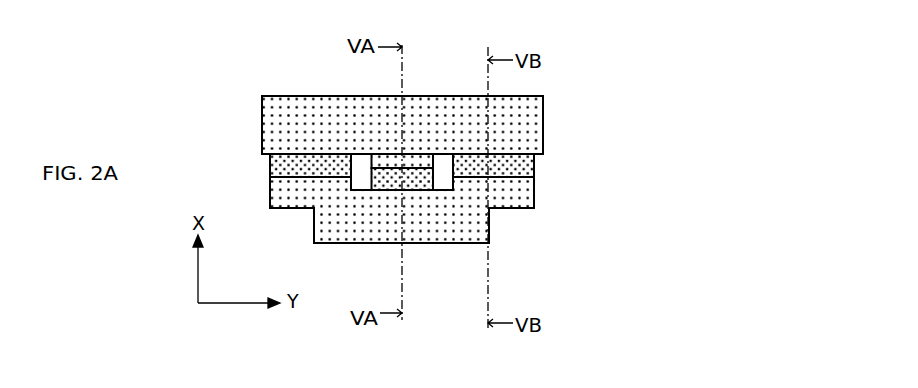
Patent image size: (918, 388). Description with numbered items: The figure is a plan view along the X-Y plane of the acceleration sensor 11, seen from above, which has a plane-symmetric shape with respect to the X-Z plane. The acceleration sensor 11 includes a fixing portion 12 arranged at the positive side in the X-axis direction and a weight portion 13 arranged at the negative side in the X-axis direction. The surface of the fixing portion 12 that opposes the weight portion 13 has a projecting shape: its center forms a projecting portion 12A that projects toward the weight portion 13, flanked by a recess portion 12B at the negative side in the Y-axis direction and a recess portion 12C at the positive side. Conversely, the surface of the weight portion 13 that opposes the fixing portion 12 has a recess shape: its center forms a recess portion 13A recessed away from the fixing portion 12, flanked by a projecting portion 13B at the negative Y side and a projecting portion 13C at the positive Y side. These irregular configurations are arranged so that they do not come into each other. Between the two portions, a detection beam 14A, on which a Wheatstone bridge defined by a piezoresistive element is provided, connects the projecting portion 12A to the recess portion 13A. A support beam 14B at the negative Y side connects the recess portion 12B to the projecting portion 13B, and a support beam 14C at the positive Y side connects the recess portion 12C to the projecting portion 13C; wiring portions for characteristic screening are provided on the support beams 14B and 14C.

The acceleration sensor 11 is at (266, 51).
The fixing portion 12 is at (271, 96).
The projecting portion 12A is at (391, 127).
The recess portion 12B is at (322, 129).
The recess portion 12C is at (476, 131).
The weight portion 13 is at (279, 209).
The recess portion 13A is at (394, 202).
The projecting portion 13B is at (325, 196).
The projecting portion 13C is at (476, 194).
The detection beam 14A is at (370, 179).
The support beam 14B is at (270, 169).
The support beam 14C is at (533, 167).